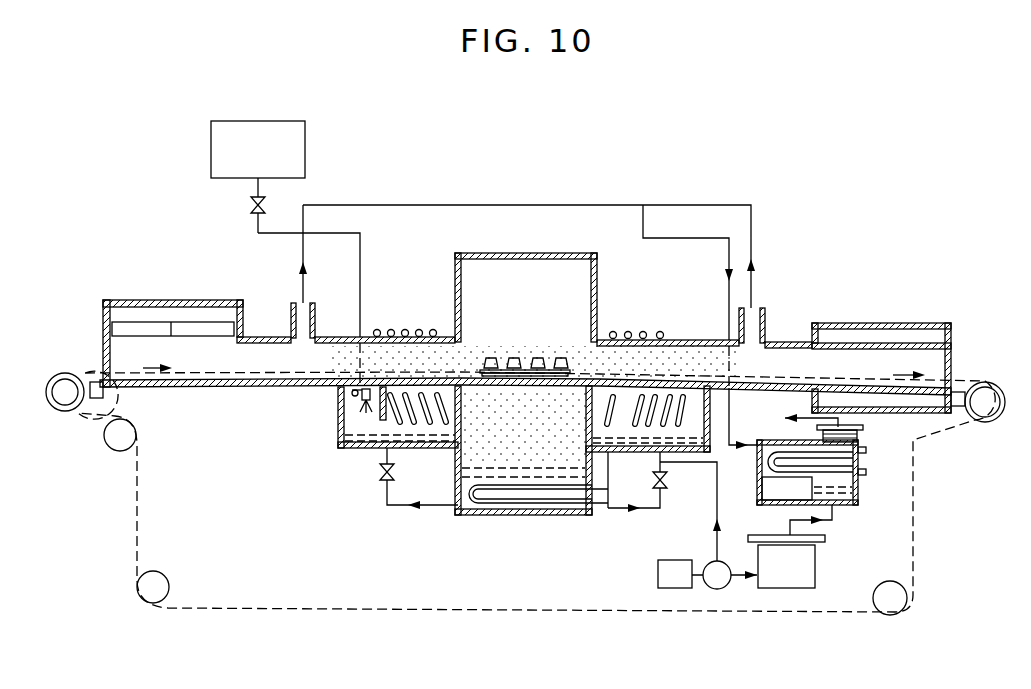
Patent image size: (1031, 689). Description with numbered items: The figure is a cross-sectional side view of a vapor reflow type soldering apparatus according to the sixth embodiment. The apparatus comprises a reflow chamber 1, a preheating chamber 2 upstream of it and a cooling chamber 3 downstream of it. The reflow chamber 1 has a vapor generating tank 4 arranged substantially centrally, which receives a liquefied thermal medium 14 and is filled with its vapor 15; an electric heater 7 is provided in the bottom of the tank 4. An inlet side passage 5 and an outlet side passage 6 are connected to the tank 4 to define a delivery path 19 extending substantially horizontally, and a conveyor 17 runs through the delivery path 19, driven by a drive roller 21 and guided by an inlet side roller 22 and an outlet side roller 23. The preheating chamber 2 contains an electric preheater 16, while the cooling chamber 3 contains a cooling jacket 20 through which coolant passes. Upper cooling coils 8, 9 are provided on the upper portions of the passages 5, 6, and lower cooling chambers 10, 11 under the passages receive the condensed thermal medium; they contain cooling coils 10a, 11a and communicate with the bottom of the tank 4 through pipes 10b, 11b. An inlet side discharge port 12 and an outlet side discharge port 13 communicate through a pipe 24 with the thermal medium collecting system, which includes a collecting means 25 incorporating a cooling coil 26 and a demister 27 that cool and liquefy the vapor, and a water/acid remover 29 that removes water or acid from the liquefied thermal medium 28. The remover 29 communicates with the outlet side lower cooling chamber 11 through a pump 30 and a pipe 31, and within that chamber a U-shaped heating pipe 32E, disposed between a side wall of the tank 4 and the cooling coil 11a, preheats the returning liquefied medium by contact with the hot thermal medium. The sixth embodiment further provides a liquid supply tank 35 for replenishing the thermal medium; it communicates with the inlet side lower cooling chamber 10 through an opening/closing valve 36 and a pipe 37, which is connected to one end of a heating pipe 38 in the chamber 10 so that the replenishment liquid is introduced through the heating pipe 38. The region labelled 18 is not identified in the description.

The reflow chamber 1 is at (477, 254).
The preheating chamber 2 is at (156, 300).
The cooling chamber 3 is at (850, 323).
The vapor generating tank 4 is at (598, 292).
The inlet side passage 5 is at (420, 328).
The outlet side passage 6 is at (628, 330).
The electric heater 7 is at (600, 510).
The upper cooling coil 8 is at (376, 328).
The upper cooling coil 9 is at (660, 330).
The inlet side lower cooling chamber 10 is at (355, 420).
The cooling coil 10a is at (390, 418).
The pipe 10b is at (392, 507).
The outlet side lower cooling chamber 11 is at (640, 432).
The cooling coil 11a is at (688, 428).
The pipe 11b is at (647, 512).
The inlet side discharge port 12 is at (316, 312).
The outlet side discharge port 13 is at (766, 318).
The liquefied thermal medium 14 is at (470, 500).
The vapor 15 is at (512, 355).
The electric preheater 16 is at (200, 338).
The conveyor 17 is at (968, 390).
The liquid 18 is at (527, 380).
The delivery path 19 is at (275, 353).
The cooling jacket 20 is at (918, 337).
The drive roller 21 is at (892, 580).
The inlet side roller 22 is at (70, 413).
The outlet side roller 23 is at (985, 424).
The pipe 24 is at (686, 240).
The collecting means 25 is at (865, 477).
The cooling coil 26 is at (776, 440).
The demister 27 is at (863, 437).
The liquefied thermal medium 28 is at (838, 510).
The water/acid remover 29 is at (816, 566).
The pump 30 is at (725, 590).
The pipe 31 is at (714, 510).
The heating pipe 32E is at (593, 424).
The liquid supply tank 35 is at (306, 132).
The opening/closing valve 36 is at (251, 205).
The pipe 37 is at (258, 238).
The heating pipe 38 is at (342, 402).